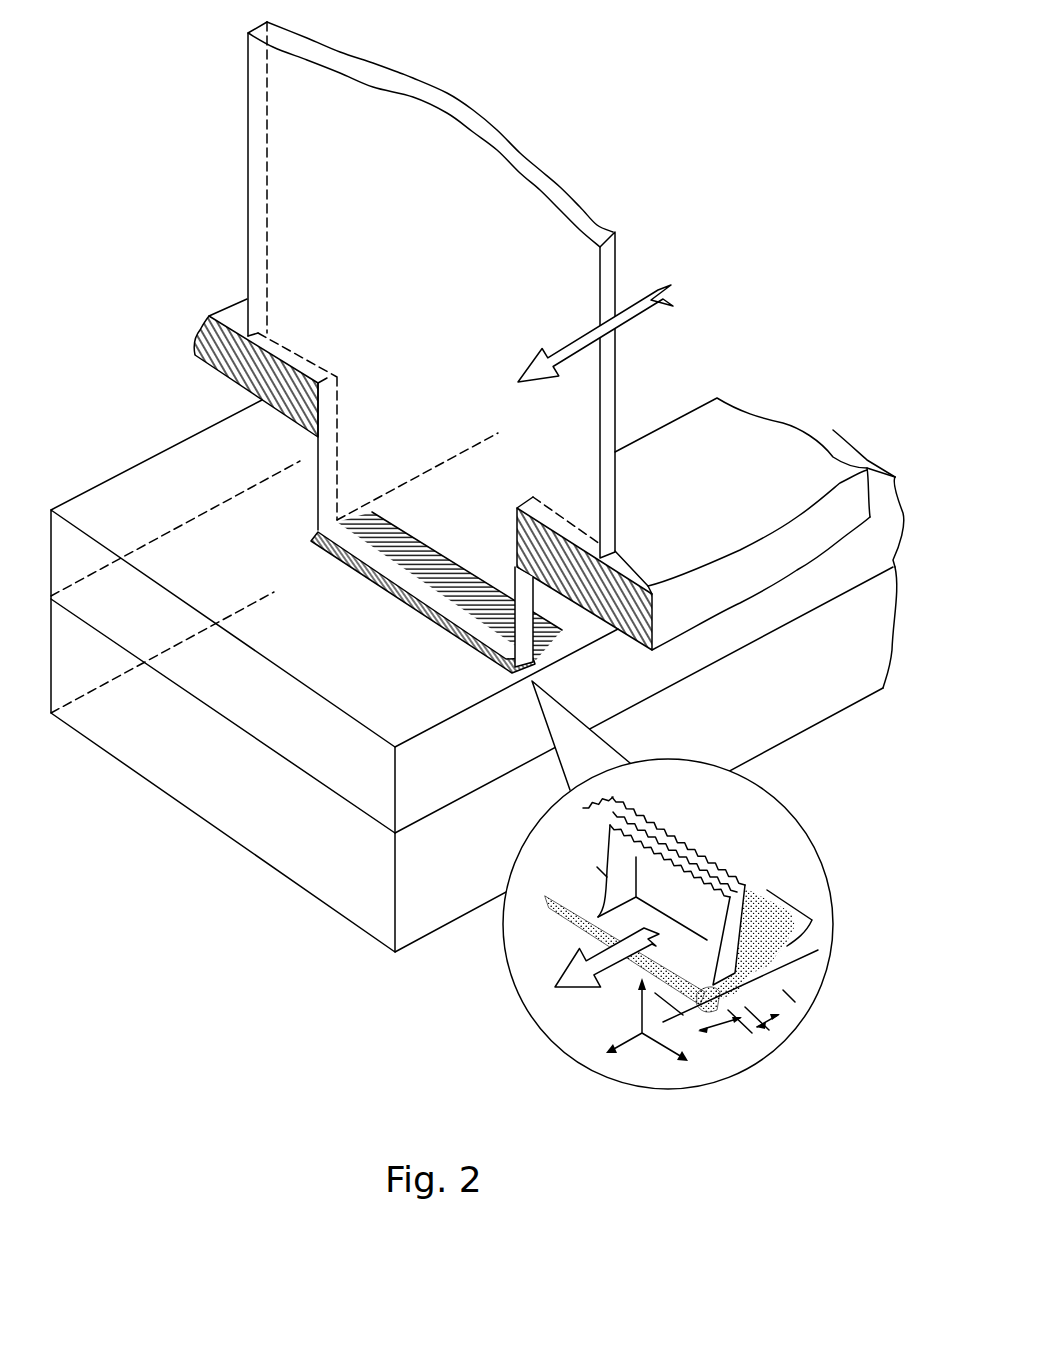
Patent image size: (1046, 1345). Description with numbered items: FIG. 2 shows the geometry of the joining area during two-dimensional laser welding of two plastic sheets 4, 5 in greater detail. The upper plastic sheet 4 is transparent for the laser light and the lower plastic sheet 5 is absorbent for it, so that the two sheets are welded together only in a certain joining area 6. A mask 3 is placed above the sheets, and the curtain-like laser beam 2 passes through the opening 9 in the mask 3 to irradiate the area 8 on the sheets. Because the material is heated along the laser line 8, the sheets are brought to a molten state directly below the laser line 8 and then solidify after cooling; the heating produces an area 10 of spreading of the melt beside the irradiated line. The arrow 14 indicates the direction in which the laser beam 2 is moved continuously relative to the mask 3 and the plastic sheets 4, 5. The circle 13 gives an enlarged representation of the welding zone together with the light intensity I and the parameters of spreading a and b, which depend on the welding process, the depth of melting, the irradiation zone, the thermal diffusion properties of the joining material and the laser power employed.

The laser beam 2 is at (540, 187).
The mask 3 is at (740, 430).
The plastic sheet 4 is at (880, 542).
The plastic sheet 5 is at (787, 700).
The joining area 6 is at (458, 497).
The laser line 8 is at (423, 597).
The opening 9 is at (327, 407).
The area of spreading 10 is at (380, 585).
The circle 13 is at (780, 845).
The arrow 14 is at (628, 307).